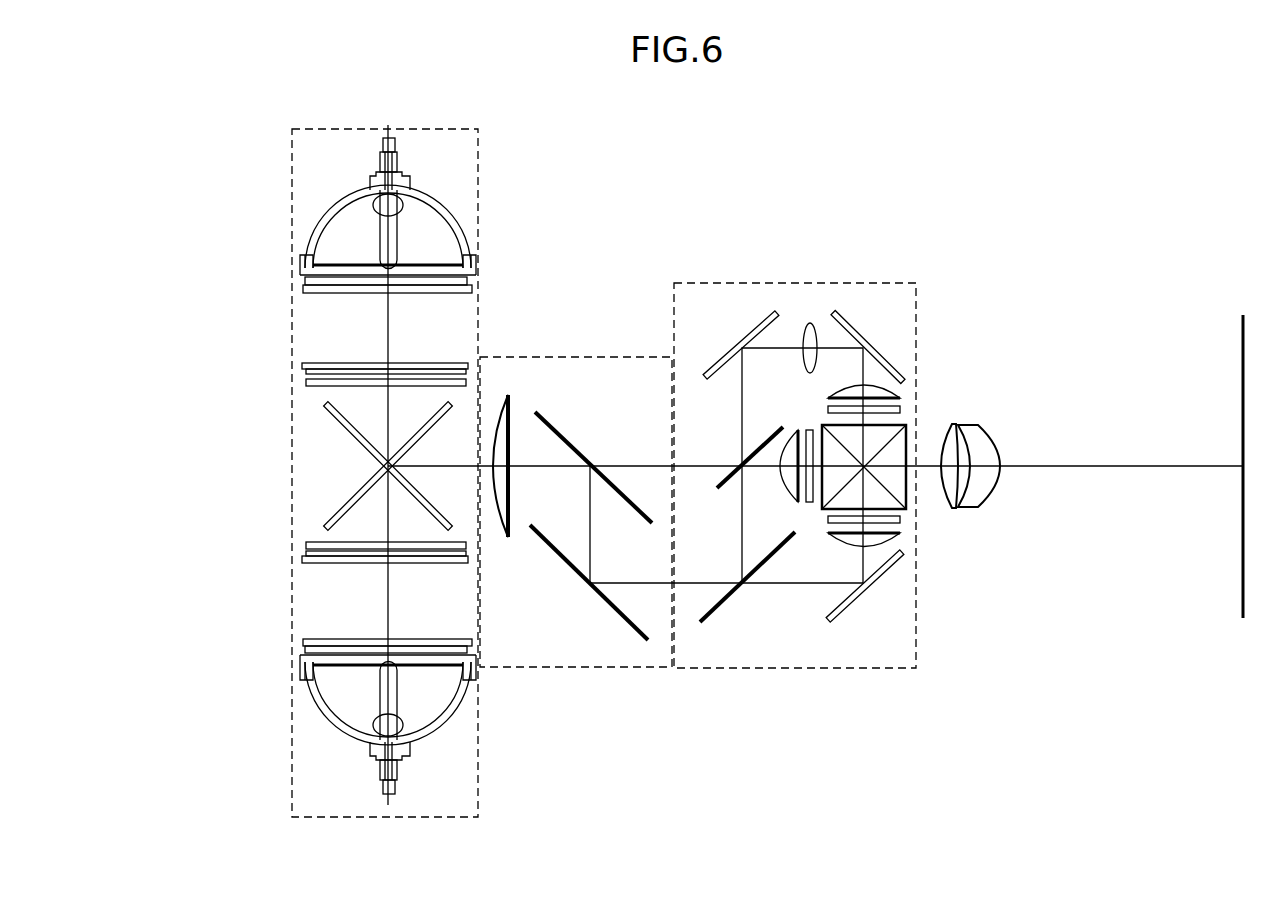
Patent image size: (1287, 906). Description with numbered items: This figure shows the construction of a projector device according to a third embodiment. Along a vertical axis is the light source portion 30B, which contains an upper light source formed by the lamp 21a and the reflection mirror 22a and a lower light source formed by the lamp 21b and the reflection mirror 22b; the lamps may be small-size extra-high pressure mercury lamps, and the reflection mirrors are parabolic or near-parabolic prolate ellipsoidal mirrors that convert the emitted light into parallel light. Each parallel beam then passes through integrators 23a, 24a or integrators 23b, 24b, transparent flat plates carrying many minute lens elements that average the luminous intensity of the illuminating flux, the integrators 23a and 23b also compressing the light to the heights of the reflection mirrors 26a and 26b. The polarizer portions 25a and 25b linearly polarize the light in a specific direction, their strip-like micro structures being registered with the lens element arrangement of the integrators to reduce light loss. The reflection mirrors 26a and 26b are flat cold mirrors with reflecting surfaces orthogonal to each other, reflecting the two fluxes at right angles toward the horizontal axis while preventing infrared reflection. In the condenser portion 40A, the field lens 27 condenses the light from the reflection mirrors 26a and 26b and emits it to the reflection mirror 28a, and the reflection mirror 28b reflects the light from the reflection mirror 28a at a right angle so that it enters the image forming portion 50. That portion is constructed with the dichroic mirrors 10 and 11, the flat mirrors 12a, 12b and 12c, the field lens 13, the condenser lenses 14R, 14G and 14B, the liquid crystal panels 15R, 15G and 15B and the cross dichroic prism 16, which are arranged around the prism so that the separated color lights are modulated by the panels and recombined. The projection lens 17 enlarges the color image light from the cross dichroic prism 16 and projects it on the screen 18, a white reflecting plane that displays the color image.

The light source portion 30B is at (290, 164).
The lamp 21a is at (400, 238).
The lamp 21b is at (392, 692).
The reflection mirror 22a is at (462, 200).
The reflection mirror 22b is at (428, 738).
The integrator 23a is at (302, 286).
The integrator 23b is at (302, 646).
The integrator 24a is at (302, 368).
The integrator 24b is at (302, 562).
The polarizer portion 25a is at (304, 382).
The polarizer portion 25b is at (304, 546).
The reflection mirror 26a is at (332, 420).
The reflection mirror 26b is at (335, 505).
The field lens 27 is at (515, 400).
The reflection mirror 28a is at (567, 440).
The reflection mirror 28b is at (565, 572).
The condenser portion 40A is at (608, 668).
The image forming portion 50 is at (828, 669).
The dichroic mirror 10 is at (718, 614).
The dichroic mirror 11 is at (722, 482).
The flat mirror 12a is at (852, 600).
The flat mirror 12b is at (742, 346).
The flat mirror 12c is at (860, 336).
The field lens 13 is at (810, 323).
The condenser lens 14R is at (835, 547).
The condenser lens 14G is at (782, 432).
The condenser lens 14B is at (903, 388).
The liquid crystal panel 15R is at (903, 518).
The liquid crystal panel 15G is at (808, 432).
The liquid crystal panel 15B is at (903, 410).
The cross dichroic prism 16 is at (910, 428).
The projection lens 17 is at (1000, 442).
The screen 18 is at (1243, 352).